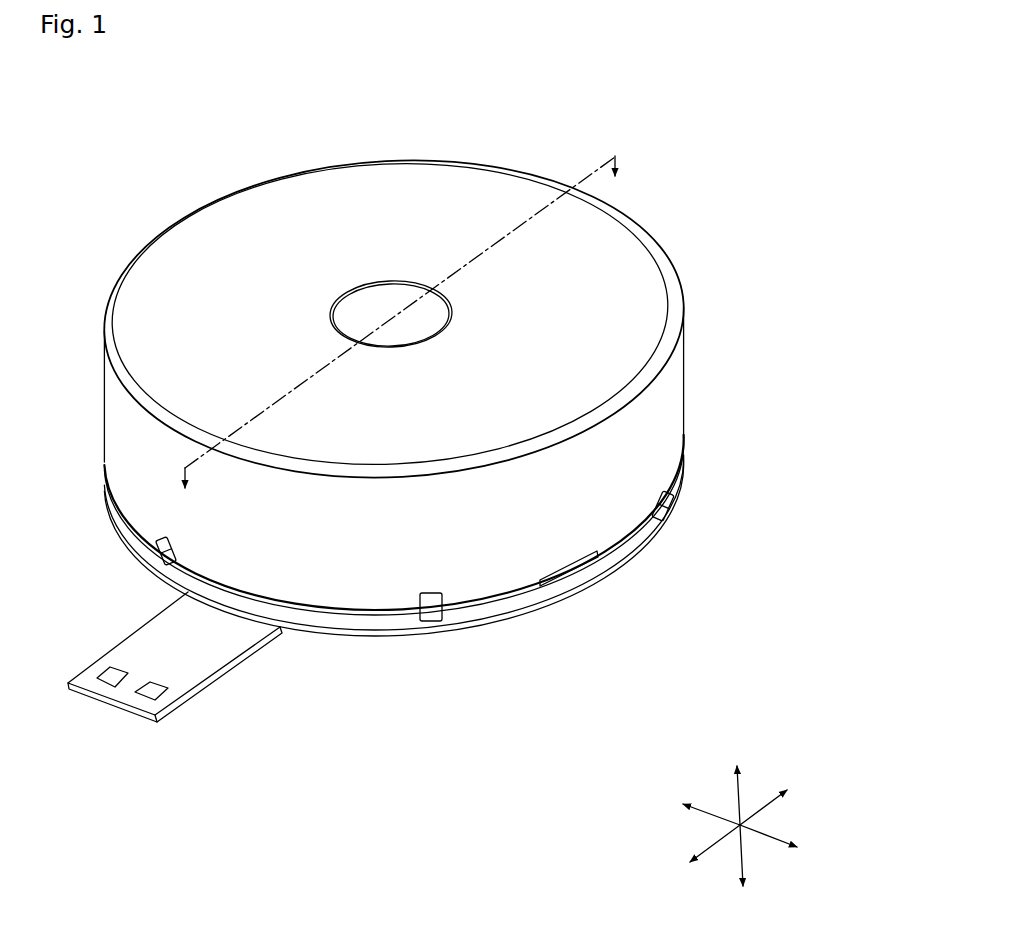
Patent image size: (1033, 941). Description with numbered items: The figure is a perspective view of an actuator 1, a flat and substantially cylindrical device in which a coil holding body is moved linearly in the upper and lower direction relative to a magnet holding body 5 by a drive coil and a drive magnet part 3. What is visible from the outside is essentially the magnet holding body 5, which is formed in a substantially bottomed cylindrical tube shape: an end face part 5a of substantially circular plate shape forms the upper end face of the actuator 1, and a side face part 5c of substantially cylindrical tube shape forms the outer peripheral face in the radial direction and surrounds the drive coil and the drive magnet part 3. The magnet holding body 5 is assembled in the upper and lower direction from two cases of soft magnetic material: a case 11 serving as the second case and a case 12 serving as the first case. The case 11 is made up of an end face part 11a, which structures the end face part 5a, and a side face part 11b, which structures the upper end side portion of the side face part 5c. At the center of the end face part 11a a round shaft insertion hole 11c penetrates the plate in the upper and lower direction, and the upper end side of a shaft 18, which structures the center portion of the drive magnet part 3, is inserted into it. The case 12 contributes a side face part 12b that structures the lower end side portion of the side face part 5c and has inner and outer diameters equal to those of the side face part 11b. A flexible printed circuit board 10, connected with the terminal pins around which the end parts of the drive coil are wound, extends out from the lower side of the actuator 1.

The actuator 1 is at (715, 119).
The drive magnet part 3 is at (391, 281).
The shaft 18 is at (397, 294).
The magnet holding body 5 is at (742, 408).
The end face part 5a is at (390, 314).
The side face part 5c is at (391, 552).
The case 11 is at (687, 425).
The end face part 11a is at (271, 279).
The side face part 11b is at (677, 383).
The shaft insertion hole 11c is at (368, 283).
The case 12 is at (688, 465).
The side face part 12b is at (627, 556).
The flexible printed circuit board 10 is at (137, 713).